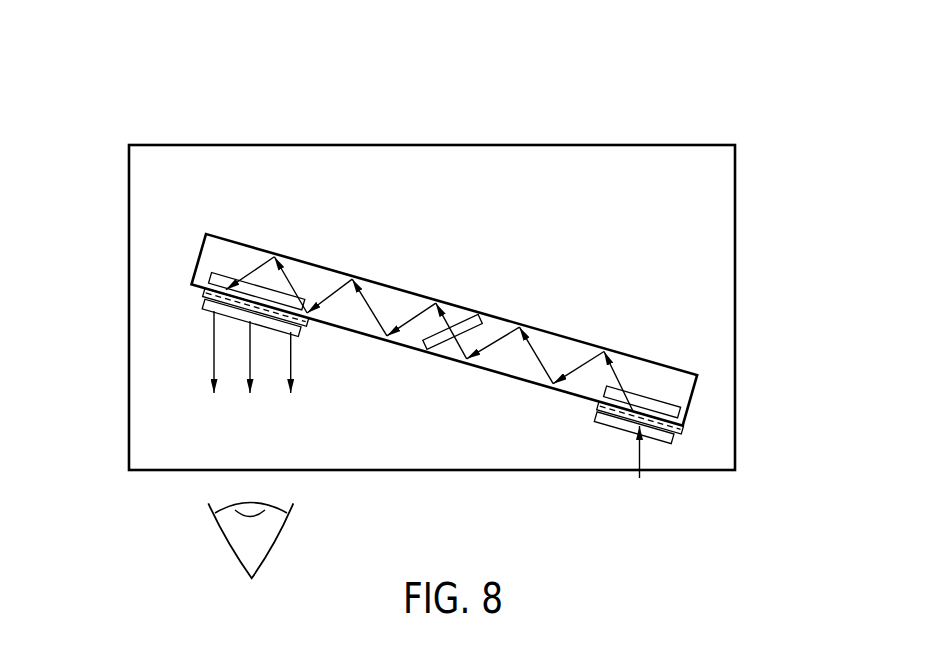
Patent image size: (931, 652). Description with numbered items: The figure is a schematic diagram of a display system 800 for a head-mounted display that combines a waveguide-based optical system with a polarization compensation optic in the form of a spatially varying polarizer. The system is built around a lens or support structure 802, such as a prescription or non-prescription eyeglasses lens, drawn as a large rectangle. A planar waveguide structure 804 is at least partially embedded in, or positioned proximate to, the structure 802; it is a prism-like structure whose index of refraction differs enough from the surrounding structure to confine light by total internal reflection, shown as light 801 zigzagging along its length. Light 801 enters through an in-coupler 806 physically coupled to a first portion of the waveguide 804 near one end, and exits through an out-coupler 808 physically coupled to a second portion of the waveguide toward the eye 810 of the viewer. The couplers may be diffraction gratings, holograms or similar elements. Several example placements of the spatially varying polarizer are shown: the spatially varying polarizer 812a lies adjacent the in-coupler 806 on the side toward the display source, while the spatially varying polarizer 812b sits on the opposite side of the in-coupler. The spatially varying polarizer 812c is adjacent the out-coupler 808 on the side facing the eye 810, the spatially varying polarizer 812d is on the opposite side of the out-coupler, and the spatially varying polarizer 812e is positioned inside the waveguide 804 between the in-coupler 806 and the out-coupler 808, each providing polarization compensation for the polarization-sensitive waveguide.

The display system 800 is at (675, 65).
The light 801 is at (213, 338).
The lens or support structure 802 is at (736, 257).
The planar waveguide structure 804 is at (560, 333).
The in-coupler 806 is at (685, 430).
The out-coupler 808 is at (207, 292).
The eye 810 is at (230, 532).
The spatially varying polarizer 812a is at (676, 442).
The spatially varying polarizer 812b is at (690, 391).
The spatially varying polarizer 812c is at (206, 301).
The spatially varying polarizer 812d is at (212, 275).
The spatially varying polarizer 812e is at (465, 318).